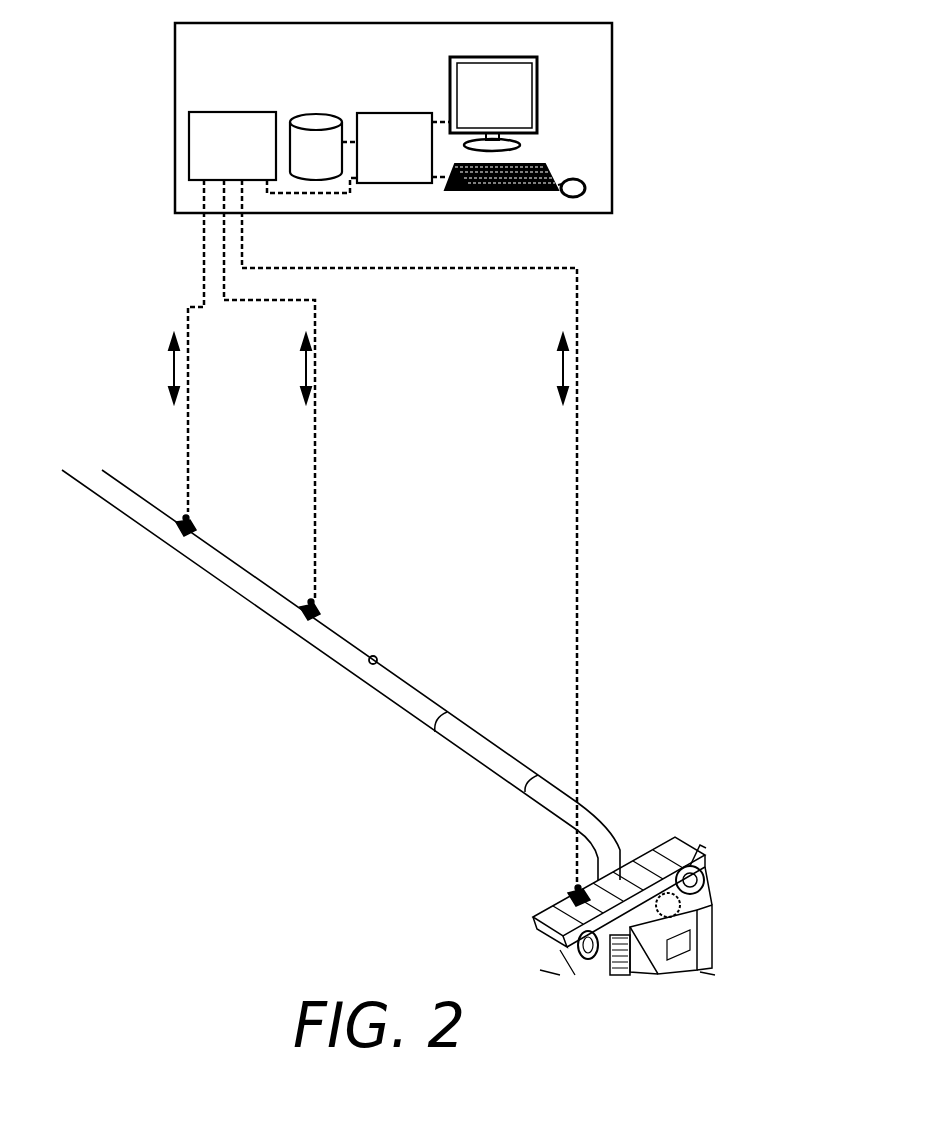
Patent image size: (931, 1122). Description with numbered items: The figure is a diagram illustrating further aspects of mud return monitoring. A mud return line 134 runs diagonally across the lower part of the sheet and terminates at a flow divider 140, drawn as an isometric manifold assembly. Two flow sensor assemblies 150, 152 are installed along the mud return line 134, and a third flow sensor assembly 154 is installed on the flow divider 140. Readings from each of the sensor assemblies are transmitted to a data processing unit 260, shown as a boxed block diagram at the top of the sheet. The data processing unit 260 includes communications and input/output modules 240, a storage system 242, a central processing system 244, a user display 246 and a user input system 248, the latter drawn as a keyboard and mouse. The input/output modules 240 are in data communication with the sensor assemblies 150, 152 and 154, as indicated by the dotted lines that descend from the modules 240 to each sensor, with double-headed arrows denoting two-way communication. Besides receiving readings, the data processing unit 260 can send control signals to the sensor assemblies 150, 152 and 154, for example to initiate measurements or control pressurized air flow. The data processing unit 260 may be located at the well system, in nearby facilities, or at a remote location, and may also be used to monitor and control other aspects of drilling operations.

The mud return line 134 is at (392, 688).
The flow divider 140 is at (677, 847).
The flow sensor assembly 150 is at (175, 527).
The flow sensor assembly 152 is at (298, 612).
The flow sensor assembly 154 is at (577, 905).
The communications and input/output modules 240 is at (251, 155).
The storage system 242 is at (338, 160).
The central processing system 244 is at (415, 158).
The user display 246 is at (514, 107).
The user input system 248 is at (557, 154).
The data processing unit 260 is at (597, 74).